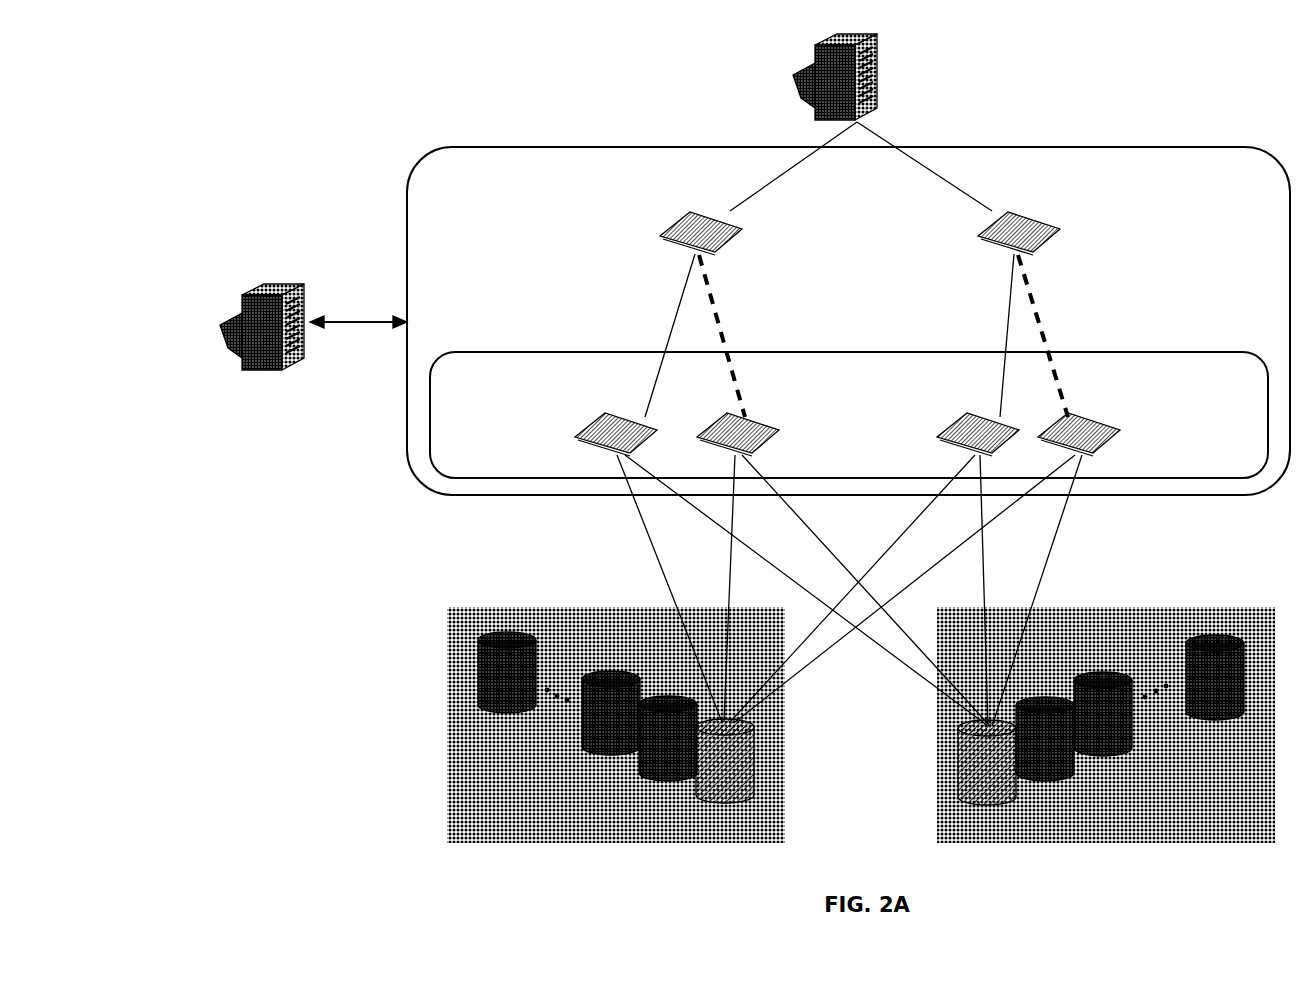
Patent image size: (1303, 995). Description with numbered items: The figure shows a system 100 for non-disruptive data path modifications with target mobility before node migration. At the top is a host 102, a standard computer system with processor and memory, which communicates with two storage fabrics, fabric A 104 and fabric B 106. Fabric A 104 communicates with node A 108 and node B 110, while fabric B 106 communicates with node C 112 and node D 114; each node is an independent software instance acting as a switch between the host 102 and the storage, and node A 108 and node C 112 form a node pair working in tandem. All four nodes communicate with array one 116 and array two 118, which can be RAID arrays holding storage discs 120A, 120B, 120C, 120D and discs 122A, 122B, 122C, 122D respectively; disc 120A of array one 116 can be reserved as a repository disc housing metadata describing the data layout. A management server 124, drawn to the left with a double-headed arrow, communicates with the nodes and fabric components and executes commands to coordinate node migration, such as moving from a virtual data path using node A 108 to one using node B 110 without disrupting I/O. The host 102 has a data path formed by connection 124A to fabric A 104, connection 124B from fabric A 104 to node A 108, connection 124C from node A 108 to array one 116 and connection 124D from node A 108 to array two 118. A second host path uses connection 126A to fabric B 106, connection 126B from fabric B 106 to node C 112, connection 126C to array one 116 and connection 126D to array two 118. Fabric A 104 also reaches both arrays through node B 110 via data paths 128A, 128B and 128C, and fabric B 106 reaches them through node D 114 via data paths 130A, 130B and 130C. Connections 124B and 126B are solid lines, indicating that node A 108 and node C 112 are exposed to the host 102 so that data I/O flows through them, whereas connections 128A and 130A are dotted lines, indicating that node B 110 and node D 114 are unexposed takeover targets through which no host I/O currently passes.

The system 100 is at (848, 263).
The host 102 is at (805, 77).
The fabric A 104 is at (627, 233).
The fabric B 106 is at (1092, 233).
The node A 108 is at (605, 408).
The node B 110 is at (759, 411).
The node C 112 is at (965, 411).
The node D 114 is at (1090, 411).
The array one 116 is at (616, 725).
The array two 118 is at (1106, 725).
The disc 120A is at (725, 761).
The disc 120B is at (668, 738).
The disc 120C is at (611, 713).
The disc 120D is at (507, 672).
The disc 122A is at (987, 762).
The disc 122B is at (1045, 739).
The disc 122C is at (1103, 714).
The disc 122D is at (1215, 677).
The management server 124 is at (306, 355).
The connection 124A is at (793, 166).
The connection 124B is at (656, 335).
The connection 124C is at (669, 588).
The connection 124D is at (806, 590).
The connection 126A is at (924, 166).
The connection 126B is at (983, 335).
The connection 126C is at (852, 588).
The connection 126D is at (973, 590).
The data path 128A is at (735, 336).
The data path 128B is at (722, 588).
The data path 128C is at (866, 590).
The data path 130A is at (1057, 336).
The data path 130B is at (905, 588).
The data path 130C is at (1037, 590).